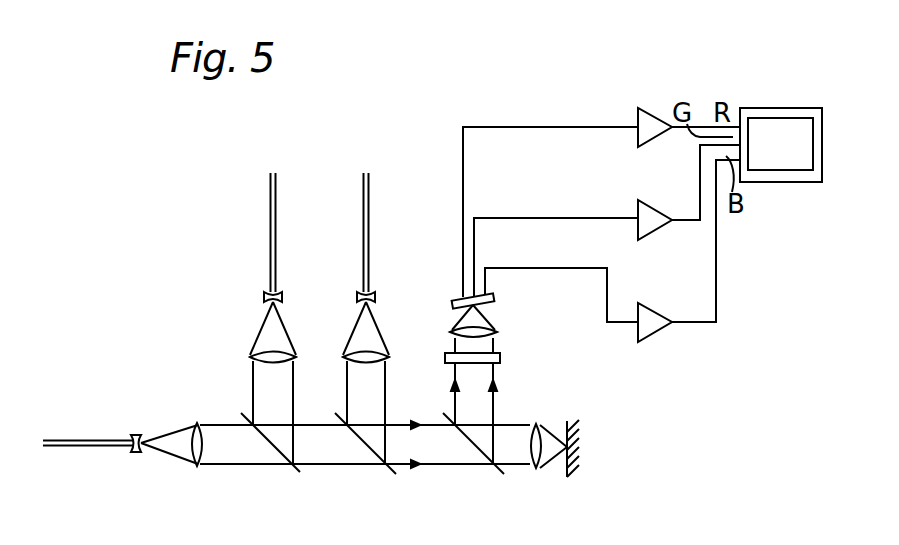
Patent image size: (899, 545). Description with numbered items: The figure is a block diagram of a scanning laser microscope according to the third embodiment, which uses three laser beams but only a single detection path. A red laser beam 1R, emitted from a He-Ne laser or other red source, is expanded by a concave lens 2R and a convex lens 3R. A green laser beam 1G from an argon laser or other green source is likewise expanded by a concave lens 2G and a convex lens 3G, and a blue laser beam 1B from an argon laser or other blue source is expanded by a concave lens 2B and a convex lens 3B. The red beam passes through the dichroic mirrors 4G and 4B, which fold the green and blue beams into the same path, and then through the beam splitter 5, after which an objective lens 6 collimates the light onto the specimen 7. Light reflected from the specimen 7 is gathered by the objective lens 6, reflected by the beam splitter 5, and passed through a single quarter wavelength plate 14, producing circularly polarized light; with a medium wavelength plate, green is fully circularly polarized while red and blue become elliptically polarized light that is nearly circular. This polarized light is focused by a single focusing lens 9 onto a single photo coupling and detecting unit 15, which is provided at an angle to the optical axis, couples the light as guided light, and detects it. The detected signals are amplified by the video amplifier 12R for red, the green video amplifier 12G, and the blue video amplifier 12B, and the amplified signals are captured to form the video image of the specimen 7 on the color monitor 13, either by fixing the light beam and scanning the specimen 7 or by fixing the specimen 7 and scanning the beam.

The red laser beam 1R is at (82, 448).
The concave lens 2R is at (133, 456).
The convex lens 3R is at (196, 468).
The dichroic mirror 4G is at (294, 474).
The dichroic mirror 4B is at (384, 476).
The beam splitter 5 is at (491, 476).
The objective lens 6 is at (534, 470).
The specimen 7 is at (578, 443).
The green laser beam 1G is at (269, 210).
The concave lens 2G is at (263, 297).
The convex lens 3G is at (251, 356).
The blue laser beam 1B is at (363, 220).
The concave lens 2B is at (356, 297).
The convex lens 3B is at (345, 356).
The quarter wavelength plate 14 is at (500, 359).
The focusing lens 9 is at (497, 333).
The photo coupling and detecting unit 15 is at (494, 297).
The video amplifier 12R is at (654, 108).
The green video amplifier 12G is at (654, 200).
The blue video amplifier 12B is at (655, 305).
The color monitor 13 is at (782, 183).